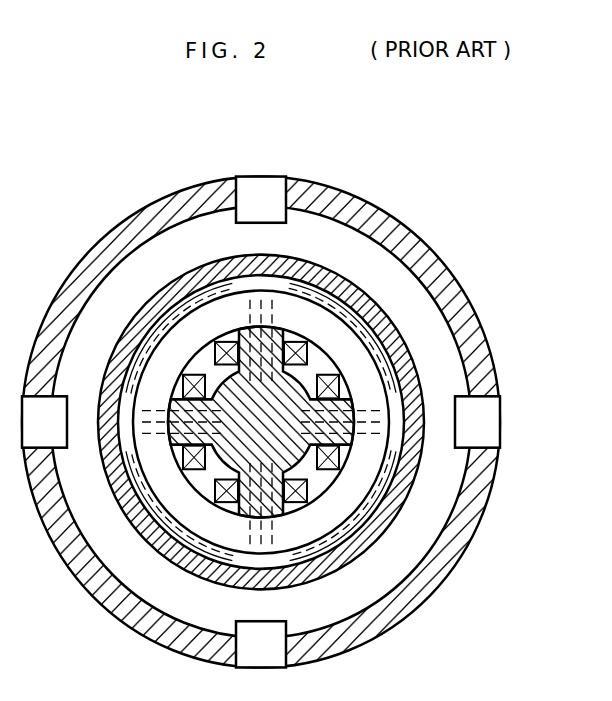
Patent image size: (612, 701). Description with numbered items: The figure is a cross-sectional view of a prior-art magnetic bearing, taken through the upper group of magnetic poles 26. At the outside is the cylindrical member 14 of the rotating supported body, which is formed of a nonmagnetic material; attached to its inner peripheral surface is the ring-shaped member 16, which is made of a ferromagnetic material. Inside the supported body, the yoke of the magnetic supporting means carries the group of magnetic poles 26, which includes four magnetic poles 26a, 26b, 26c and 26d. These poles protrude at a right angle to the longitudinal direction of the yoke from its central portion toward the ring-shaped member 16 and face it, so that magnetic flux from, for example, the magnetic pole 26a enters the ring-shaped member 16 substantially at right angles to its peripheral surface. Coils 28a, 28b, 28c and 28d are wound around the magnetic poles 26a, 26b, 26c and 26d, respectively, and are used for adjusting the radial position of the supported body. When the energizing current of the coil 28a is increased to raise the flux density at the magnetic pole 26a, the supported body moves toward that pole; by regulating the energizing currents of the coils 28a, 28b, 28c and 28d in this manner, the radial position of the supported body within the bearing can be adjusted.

The cylindrical member 14 is at (360, 422).
The ring-shaped member 16 is at (349, 420).
The group of magnetic poles 26 is at (247, 422).
The magnetic pole 26a is at (180, 391).
The magnetic pole 26b is at (285, 505).
The magnetic pole 26c is at (378, 388).
The magnetic pole 26d is at (295, 306).
The coil 28a is at (157, 505).
The coil 28b is at (360, 506).
The coil 28c is at (367, 338).
The coil 28d is at (169, 333).